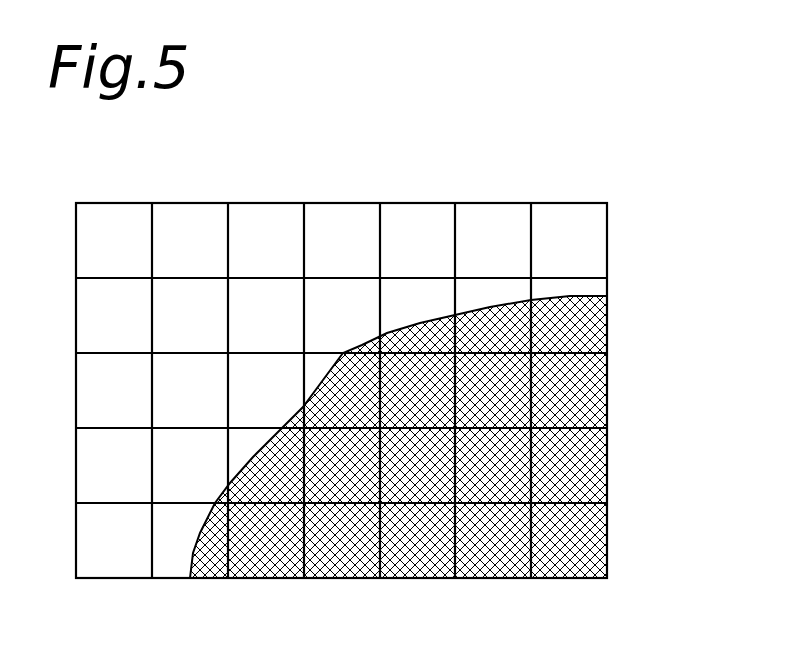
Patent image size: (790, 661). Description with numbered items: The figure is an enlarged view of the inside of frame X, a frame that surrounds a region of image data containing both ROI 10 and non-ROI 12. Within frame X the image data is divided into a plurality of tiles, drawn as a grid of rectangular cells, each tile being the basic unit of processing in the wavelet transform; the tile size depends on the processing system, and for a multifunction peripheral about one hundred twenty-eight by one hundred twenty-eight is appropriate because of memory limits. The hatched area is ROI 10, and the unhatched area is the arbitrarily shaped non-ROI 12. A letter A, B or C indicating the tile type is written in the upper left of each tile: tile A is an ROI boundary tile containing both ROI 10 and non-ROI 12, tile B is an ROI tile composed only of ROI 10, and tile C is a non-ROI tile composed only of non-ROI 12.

The ROI 10 is at (590, 473).
The non-ROI 12 is at (583, 248).
The frame X is at (357, 203).